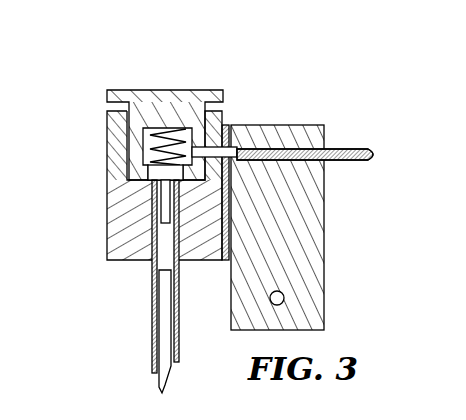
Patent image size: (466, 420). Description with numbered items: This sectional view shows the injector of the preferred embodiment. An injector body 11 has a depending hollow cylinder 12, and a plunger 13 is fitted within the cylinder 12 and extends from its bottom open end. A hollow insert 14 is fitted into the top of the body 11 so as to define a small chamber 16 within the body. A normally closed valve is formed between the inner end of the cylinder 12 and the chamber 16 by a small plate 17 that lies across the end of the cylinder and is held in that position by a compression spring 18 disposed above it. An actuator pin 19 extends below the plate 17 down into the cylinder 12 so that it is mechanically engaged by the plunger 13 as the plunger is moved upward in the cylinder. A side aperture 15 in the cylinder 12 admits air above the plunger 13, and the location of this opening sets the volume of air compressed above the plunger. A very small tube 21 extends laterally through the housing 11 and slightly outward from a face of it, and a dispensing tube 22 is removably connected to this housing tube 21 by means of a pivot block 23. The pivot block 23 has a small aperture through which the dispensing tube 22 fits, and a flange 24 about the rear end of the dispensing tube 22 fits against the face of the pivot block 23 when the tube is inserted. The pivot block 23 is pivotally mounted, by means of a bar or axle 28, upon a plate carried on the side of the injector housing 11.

The injector body 11 is at (108, 166).
The hollow cylinder 12 is at (152, 342).
The plunger 13 is at (167, 333).
The hollow insert 14 is at (158, 90).
The side aperture 15 is at (152, 285).
The chamber 16 is at (187, 127).
The plate 17 is at (162, 172).
The compression spring 18 is at (150, 137).
The actuator pin 19 is at (163, 215).
The tube 21 is at (226, 126).
The dispensing tube 22 is at (340, 148).
The pivot block 23 is at (326, 254).
The flange 24 is at (227, 145).
The bar or axle 28 is at (284, 300).